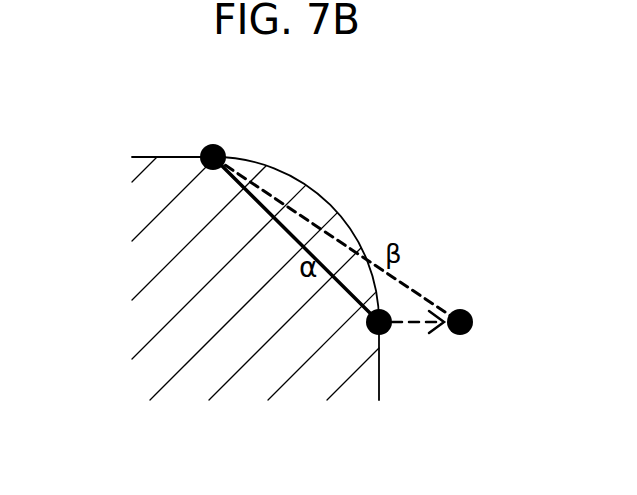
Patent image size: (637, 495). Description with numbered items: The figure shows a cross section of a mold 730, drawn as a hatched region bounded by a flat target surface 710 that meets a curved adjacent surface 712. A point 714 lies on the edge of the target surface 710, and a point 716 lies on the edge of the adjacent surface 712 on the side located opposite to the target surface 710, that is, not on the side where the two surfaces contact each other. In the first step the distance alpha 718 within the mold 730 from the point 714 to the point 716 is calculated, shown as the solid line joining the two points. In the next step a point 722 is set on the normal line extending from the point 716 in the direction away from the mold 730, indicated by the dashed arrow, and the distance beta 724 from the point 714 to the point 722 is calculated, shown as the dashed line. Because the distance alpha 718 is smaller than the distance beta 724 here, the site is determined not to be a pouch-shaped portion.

The target surface 710 is at (177, 157).
The adjacent surface 712 is at (335, 205).
The point on an edge of the target surface 714 is at (224, 144).
The point on an edge of the adjacent surface 716 is at (366, 332).
The distance α 718 is at (283, 233).
The point on a normal line 722 is at (473, 316).
The distance β 724 is at (417, 290).
The mold 730 is at (162, 222).